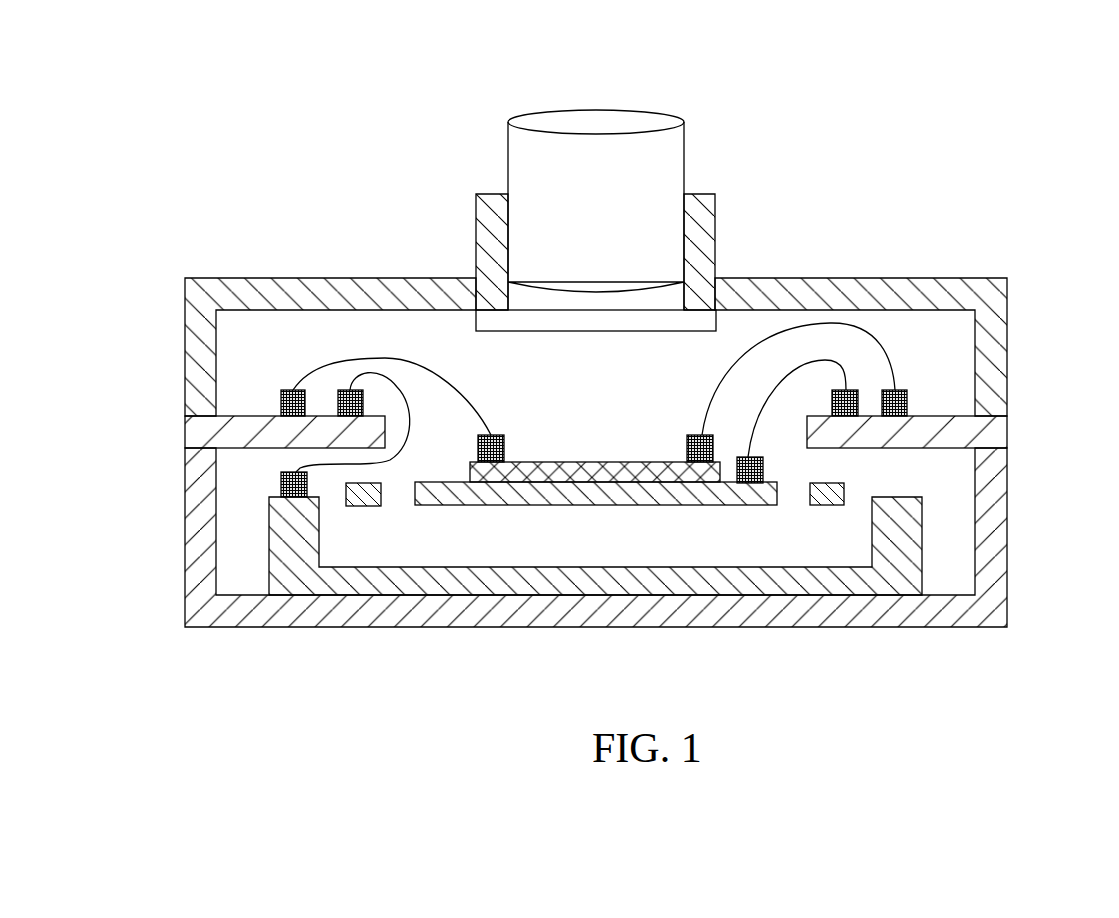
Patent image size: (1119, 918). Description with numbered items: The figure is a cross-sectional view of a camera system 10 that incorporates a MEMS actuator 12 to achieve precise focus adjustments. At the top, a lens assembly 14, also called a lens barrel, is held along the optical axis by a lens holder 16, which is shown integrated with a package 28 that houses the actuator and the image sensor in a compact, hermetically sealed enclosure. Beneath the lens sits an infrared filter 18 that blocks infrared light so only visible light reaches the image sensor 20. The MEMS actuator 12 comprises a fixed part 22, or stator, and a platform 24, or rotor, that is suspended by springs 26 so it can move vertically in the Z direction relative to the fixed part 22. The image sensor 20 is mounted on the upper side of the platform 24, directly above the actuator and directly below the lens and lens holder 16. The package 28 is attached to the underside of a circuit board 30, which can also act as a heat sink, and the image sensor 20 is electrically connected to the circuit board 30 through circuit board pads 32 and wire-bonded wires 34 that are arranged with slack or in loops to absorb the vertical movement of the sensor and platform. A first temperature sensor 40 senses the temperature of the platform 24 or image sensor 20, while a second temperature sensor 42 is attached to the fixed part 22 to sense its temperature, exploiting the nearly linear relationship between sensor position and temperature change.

The camera system 10 is at (1049, 181).
The MEMS actuator 12 is at (914, 466).
The lens assembly 14 is at (675, 153).
The lens holder 16 is at (705, 226).
The infrared filter 18 is at (538, 318).
The image sensor 20 is at (612, 470).
The fixed part 22 is at (675, 587).
The platform 24 is at (503, 493).
The springs 26 is at (360, 495).
The package 28 is at (1000, 594).
The circuit board 30 is at (998, 431).
The circuit board pads 32 is at (281, 401).
The wires 34 is at (308, 371).
The first temperature sensor 40 is at (745, 483).
The second temperature sensor 42 is at (281, 487).